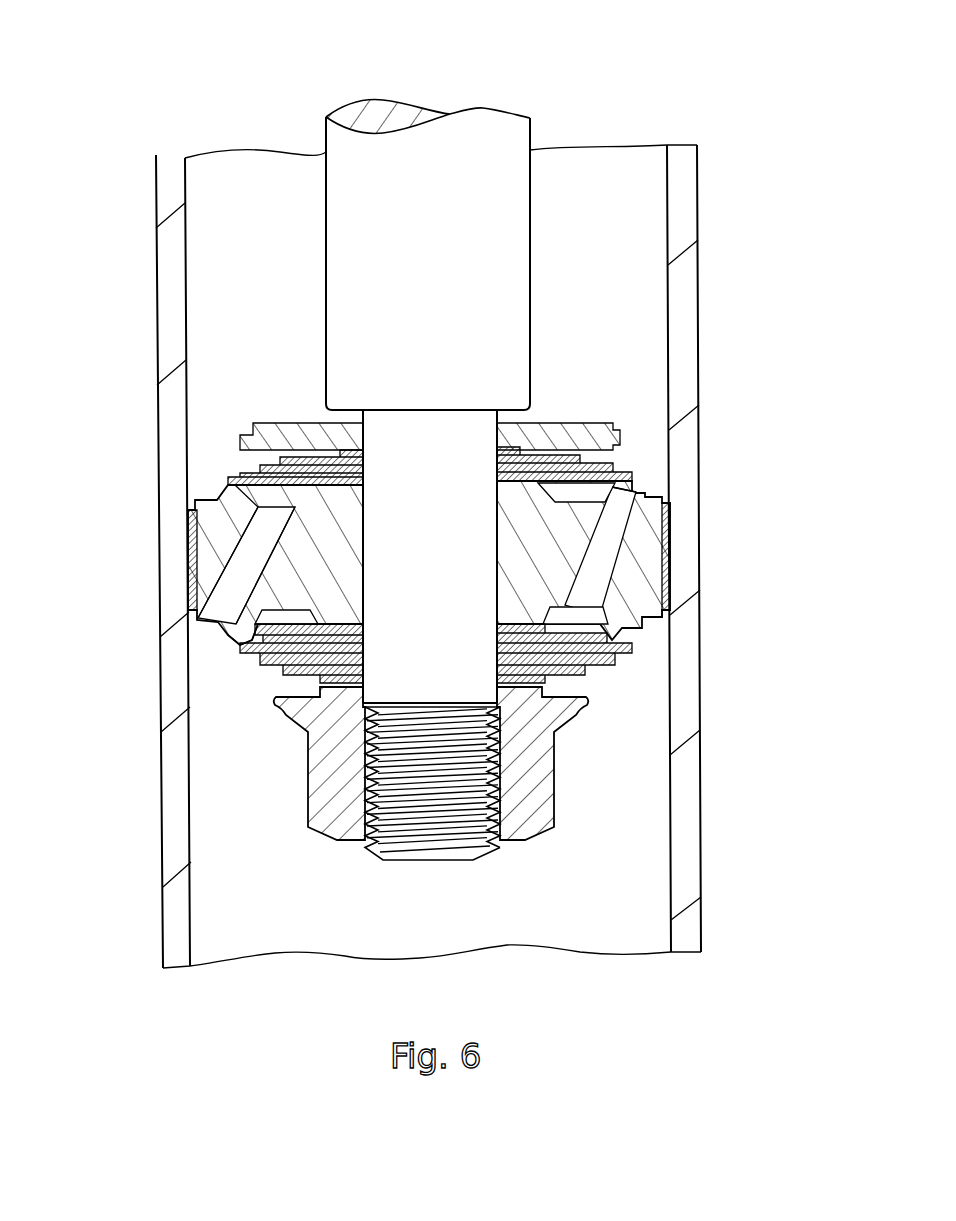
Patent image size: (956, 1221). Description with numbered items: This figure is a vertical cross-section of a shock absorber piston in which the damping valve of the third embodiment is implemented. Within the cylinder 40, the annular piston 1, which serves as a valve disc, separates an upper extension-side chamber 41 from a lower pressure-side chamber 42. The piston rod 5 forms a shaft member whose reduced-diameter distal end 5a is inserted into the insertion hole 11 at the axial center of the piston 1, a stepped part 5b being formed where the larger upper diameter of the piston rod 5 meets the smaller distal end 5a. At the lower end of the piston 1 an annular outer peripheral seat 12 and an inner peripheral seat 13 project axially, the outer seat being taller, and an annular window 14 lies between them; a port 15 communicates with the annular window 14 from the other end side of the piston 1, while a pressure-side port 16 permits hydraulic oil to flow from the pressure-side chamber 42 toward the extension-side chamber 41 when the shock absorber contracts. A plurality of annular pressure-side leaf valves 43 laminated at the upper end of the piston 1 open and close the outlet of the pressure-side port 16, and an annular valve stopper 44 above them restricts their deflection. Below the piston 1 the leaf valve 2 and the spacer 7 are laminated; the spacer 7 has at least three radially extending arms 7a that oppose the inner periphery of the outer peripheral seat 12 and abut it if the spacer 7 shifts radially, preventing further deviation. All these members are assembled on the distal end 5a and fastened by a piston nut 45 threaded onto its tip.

The piston 1 is at (672, 502).
The leaf valve 2 is at (228, 668).
The piston rod 5 is at (536, 168).
The distal end 5a is at (380, 548).
The stepped part 5b is at (300, 421).
The spacer 7 is at (318, 608).
The arms 7a is at (255, 622).
The insertion hole 11 is at (600, 540).
The outer peripheral seat 12 is at (606, 625).
The inner peripheral seat 13 is at (560, 698).
The annular window 14 is at (640, 597).
The port 15 is at (616, 574).
The pressure-side port 16 is at (190, 509).
The cylinder 40 is at (690, 200).
The extension-side chamber 41 is at (225, 237).
The pressure-side chamber 42 is at (245, 878).
The pressure-side leaf valves 43 is at (624, 456).
The valve stopper 44 is at (615, 416).
The piston nut 45 is at (560, 785).